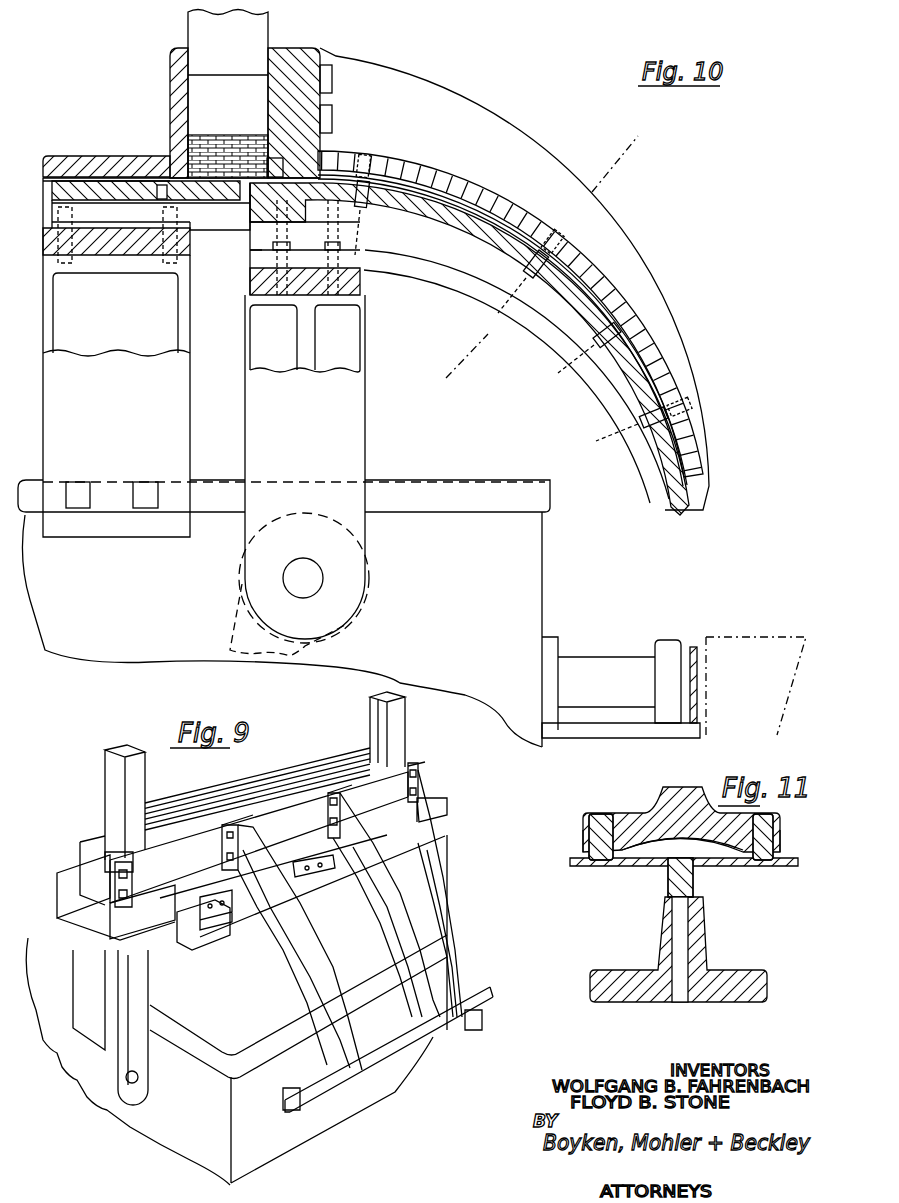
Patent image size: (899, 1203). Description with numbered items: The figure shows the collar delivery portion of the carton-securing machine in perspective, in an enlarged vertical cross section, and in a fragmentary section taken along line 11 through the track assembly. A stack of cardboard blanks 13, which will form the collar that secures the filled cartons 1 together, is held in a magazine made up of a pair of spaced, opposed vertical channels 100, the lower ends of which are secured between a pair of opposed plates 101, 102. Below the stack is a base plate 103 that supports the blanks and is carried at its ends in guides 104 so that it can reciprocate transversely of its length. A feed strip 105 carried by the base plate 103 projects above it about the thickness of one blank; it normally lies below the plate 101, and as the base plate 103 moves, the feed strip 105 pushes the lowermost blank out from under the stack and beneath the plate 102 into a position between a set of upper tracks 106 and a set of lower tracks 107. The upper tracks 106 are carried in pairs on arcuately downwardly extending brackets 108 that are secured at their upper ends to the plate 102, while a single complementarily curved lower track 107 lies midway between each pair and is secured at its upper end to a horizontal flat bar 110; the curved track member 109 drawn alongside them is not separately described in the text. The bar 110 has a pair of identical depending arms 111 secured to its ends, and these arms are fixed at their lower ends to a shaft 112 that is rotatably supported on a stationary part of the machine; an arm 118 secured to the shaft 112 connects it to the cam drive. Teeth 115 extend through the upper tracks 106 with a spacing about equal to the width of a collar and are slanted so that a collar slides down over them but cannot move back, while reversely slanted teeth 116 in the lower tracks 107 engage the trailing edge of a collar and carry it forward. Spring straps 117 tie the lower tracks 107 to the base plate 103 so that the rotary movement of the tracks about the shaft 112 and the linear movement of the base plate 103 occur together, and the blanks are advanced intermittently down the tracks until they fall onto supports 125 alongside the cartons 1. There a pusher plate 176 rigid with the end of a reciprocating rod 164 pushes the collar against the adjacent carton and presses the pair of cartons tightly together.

In FIG. 10, the vertical channels 100 is at (188, 28).
In FIG. 9, the vertical channels 100 is at (106, 768).
In FIG. 10, the plate 101 is at (178, 52).
In FIG. 9, the plate 101 is at (88, 840).
In FIG. 10, the plate 102 is at (282, 48).
In FIG. 9, the plate 102 is at (267, 834).
In FIG. 10, the cardboard blanks 13 is at (216, 124).
In FIG. 9, the cardboard blanks 13 is at (209, 780).
In FIG. 10, the feed strip 105 is at (152, 175).
In FIG. 10, the base plate 103 is at (218, 225).
In FIG. 10, the spring straps 117 is at (224, 203).
In FIG. 9, the spring straps 117 is at (192, 897).
In FIG. 10, the horizontal flat bar 110 is at (362, 290).
In FIG. 9, the horizontal flat bar 110 is at (200, 968).
In FIG. 10, the depending arms 111 is at (361, 417).
In FIG. 9, the depending arms 111 is at (120, 1057).
In FIG. 10, the shaft 112 is at (323, 582).
In FIG. 9, the shaft 112 is at (135, 1083).
In FIG. 10, the arm 118 is at (340, 650).
In FIG. 10, the brackets 108 is at (532, 130).
In FIG. 9, the brackets 108 is at (407, 893).
In FIG. 11, the brackets 108 is at (656, 795).
In FIG. 10, the upper tracks 106 is at (594, 266).
In FIG. 11, the upper tracks 106 is at (585, 845).
In FIG. 10, the lower tracks 107 is at (622, 360).
In FIG. 11, the lower tracks 107 is at (662, 878).
In FIG. 10, the curved arm 109 is at (545, 360).
In FIG. 9, the curved arm 109 is at (405, 925).
In FIG. 11, the curved arm 109 is at (715, 960).
In FIG. 10, the teeth 115 is at (284, 165).
In FIG. 11, the teeth 115 is at (603, 815).
In FIG. 10, the teeth 116 is at (430, 153).
In FIG. 11, the teeth 116 is at (695, 882).
In FIG. 10, the section line 11— 11 is at (615, 140).
In FIG. 10, the rod 164 is at (616, 660).
In FIG. 10, the pusher plate 176 is at (667, 640).
In FIG. 10, the filled cartons 1 is at (749, 635).
In FIG. 10, the supports 125 is at (597, 738).
In FIG. 9, the supports 125 is at (485, 1020).
In FIG. 9, the guides 104 is at (447, 828).